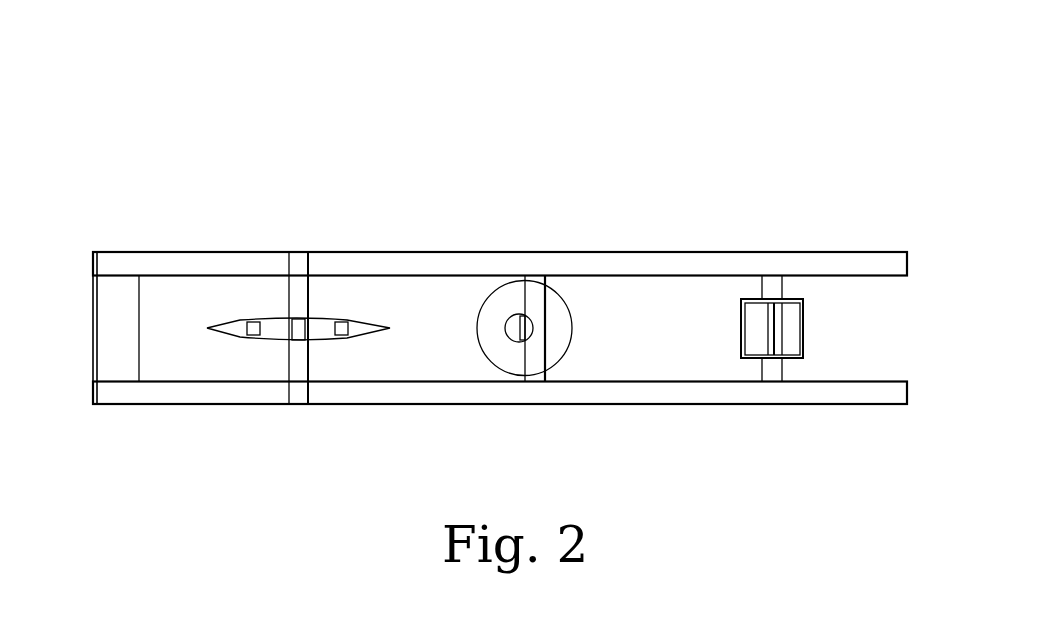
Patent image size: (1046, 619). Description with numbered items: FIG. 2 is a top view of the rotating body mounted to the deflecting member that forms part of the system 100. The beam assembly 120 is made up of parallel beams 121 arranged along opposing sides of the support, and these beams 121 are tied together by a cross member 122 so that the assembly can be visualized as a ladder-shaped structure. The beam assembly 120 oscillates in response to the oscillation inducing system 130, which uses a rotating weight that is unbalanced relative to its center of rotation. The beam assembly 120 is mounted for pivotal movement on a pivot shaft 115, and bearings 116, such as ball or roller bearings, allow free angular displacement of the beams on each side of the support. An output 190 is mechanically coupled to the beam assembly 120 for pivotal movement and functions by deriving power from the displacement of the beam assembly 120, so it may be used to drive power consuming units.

The system 100 is at (663, 100).
The pivot shaft 115 is at (775, 328).
The bearings 116 is at (782, 375).
The beam assembly 120 is at (352, 240).
The beams 121 is at (503, 404).
The cross member 122 is at (93, 327).
The oscillation inducing system 130 is at (218, 318).
The output 190 is at (503, 337).